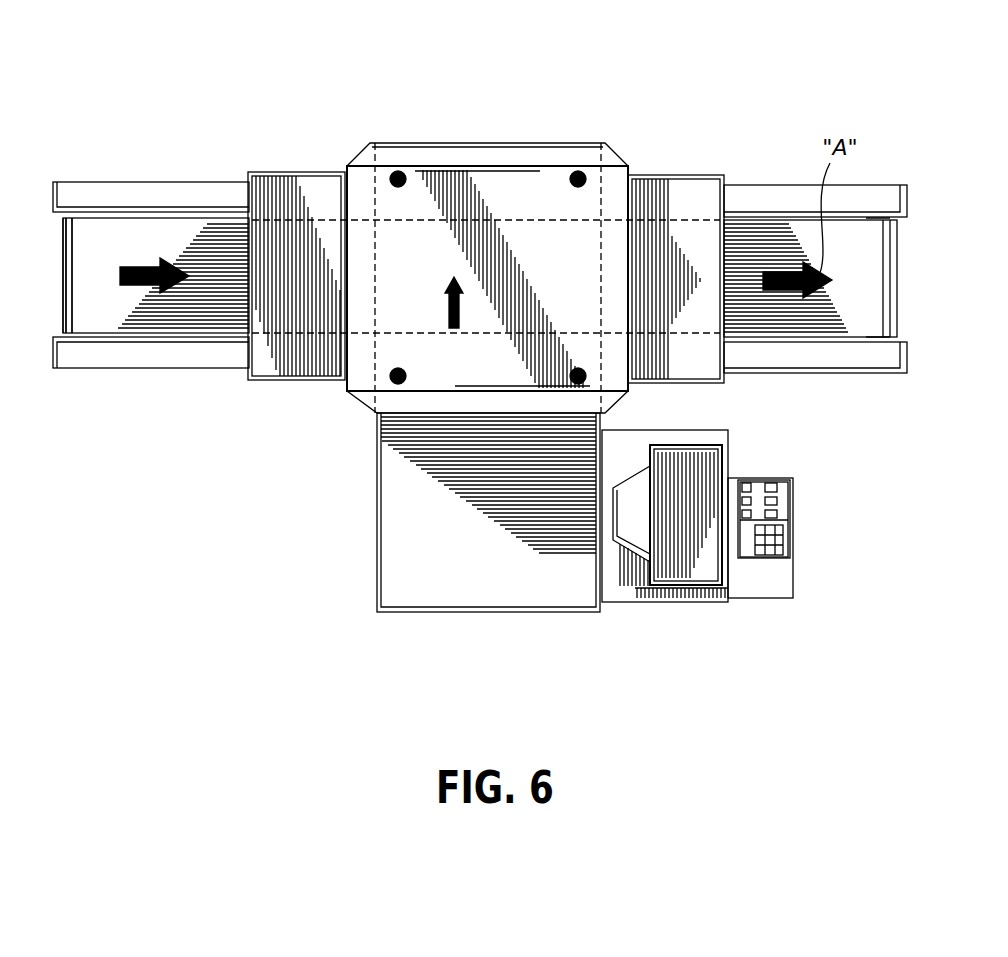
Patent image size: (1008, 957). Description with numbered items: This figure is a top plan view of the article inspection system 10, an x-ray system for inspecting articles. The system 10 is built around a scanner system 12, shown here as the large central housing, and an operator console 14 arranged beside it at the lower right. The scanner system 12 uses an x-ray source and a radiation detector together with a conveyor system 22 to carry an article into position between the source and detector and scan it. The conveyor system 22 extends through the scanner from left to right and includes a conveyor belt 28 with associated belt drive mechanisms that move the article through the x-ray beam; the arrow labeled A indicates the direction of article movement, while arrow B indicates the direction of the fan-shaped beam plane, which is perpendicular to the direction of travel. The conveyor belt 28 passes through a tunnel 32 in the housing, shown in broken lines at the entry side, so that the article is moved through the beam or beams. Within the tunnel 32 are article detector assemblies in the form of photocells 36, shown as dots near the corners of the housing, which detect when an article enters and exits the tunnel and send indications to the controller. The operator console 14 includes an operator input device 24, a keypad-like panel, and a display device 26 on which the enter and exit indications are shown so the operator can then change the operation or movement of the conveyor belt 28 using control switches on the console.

The article inspection system 10 is at (695, 100).
The scanner system 12 is at (377, 458).
The operator console 14 is at (688, 604).
The conveyor system 22 is at (183, 182).
The operator input device 24 is at (760, 528).
The display device 26 is at (640, 560).
The conveyor belt 28 is at (58, 262).
The tunnel 32 is at (318, 262).
The photocells 36 is at (396, 171).